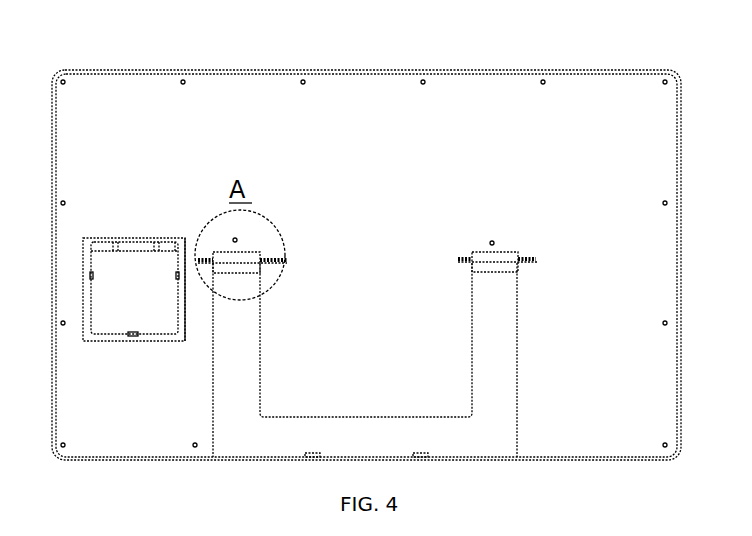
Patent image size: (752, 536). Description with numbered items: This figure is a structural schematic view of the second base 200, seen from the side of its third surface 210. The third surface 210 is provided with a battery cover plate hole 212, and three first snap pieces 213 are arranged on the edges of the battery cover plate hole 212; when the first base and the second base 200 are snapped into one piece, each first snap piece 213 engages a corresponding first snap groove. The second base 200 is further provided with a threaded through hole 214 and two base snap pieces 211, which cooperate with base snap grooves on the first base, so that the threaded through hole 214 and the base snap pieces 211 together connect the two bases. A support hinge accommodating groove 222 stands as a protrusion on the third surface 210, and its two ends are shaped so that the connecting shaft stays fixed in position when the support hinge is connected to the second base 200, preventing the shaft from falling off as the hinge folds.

The second base 200 is at (690, 45).
The third surface 210 is at (362, 125).
The base snap piece 211 is at (312, 455).
The battery cover plate hole 212 is at (178, 272).
The first snap piece 213 is at (163, 289).
The threaded through hole 214 is at (182, 84).
The support hinge accommodating groove 222 is at (262, 330).